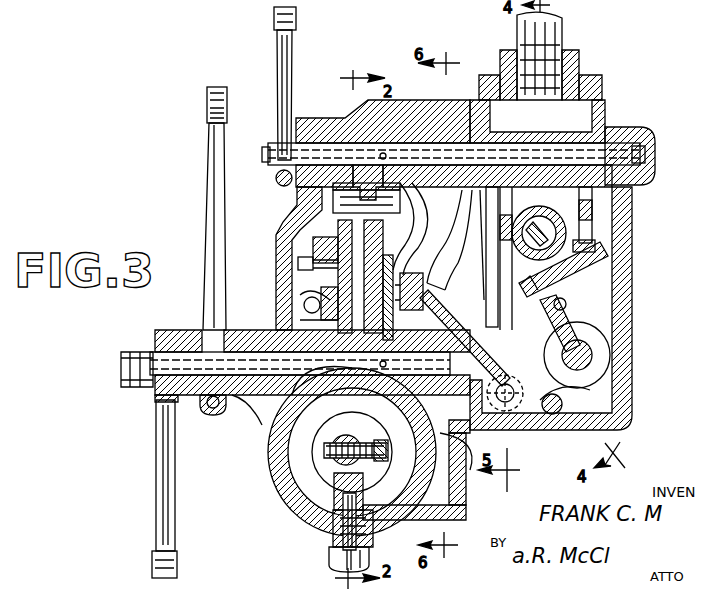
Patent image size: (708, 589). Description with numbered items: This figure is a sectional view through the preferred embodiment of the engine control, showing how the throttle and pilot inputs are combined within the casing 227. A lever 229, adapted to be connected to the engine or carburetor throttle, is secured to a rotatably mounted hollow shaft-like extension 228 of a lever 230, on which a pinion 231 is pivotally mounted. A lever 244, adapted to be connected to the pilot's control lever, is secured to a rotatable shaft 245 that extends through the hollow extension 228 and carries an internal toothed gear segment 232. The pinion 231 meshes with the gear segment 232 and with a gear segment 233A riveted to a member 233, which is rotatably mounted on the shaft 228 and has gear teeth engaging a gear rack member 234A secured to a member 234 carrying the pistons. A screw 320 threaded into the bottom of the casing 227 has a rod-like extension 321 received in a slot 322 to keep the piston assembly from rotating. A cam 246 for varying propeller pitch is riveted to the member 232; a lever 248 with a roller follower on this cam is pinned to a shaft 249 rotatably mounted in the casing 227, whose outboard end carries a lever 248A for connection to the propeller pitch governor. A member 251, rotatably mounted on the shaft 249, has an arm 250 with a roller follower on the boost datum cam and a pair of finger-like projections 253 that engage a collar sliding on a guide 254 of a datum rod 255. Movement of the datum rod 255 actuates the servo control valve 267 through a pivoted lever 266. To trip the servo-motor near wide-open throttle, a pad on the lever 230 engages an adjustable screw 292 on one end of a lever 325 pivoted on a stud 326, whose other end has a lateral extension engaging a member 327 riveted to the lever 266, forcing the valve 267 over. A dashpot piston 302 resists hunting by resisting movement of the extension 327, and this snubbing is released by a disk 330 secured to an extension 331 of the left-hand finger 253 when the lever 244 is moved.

The casing 227 is at (275, 503).
The hollow shaft-like extension 228 is at (246, 398).
The lever 229 is at (209, 187).
The lever 230 is at (290, 282).
The pinion 231 is at (338, 232).
The internal toothed gear segment 232 is at (300, 225).
The member 233 is at (300, 432).
The gear segment 233A is at (304, 305).
The member 234 is at (305, 462).
The gear rack member 234A is at (400, 420).
The lever 244 is at (160, 525).
The shaft 245 is at (170, 350).
The cam 246 is at (392, 188).
The lever 248 is at (380, 141).
The lever 248A is at (290, 57).
The shaft 249 is at (612, 148).
The arm 250 is at (455, 245).
The member 251 is at (498, 145).
The finger-like projections 253 is at (496, 187).
The guide 254 is at (512, 196).
The datum rod 255 is at (592, 213).
The pivoted lever 266 is at (560, 340).
The control valve 267 is at (592, 350).
The adjustable screw 292 is at (300, 322).
The dashpot piston 302 is at (542, 430).
The screw 320 is at (330, 557).
The rod-like extension 321 is at (318, 525).
The slot 322 is at (470, 496).
The lever 325 is at (431, 291).
The stud 326 is at (444, 274).
The member 327 is at (612, 390).
The disk 330 is at (500, 308).
The extension 331 is at (482, 425).